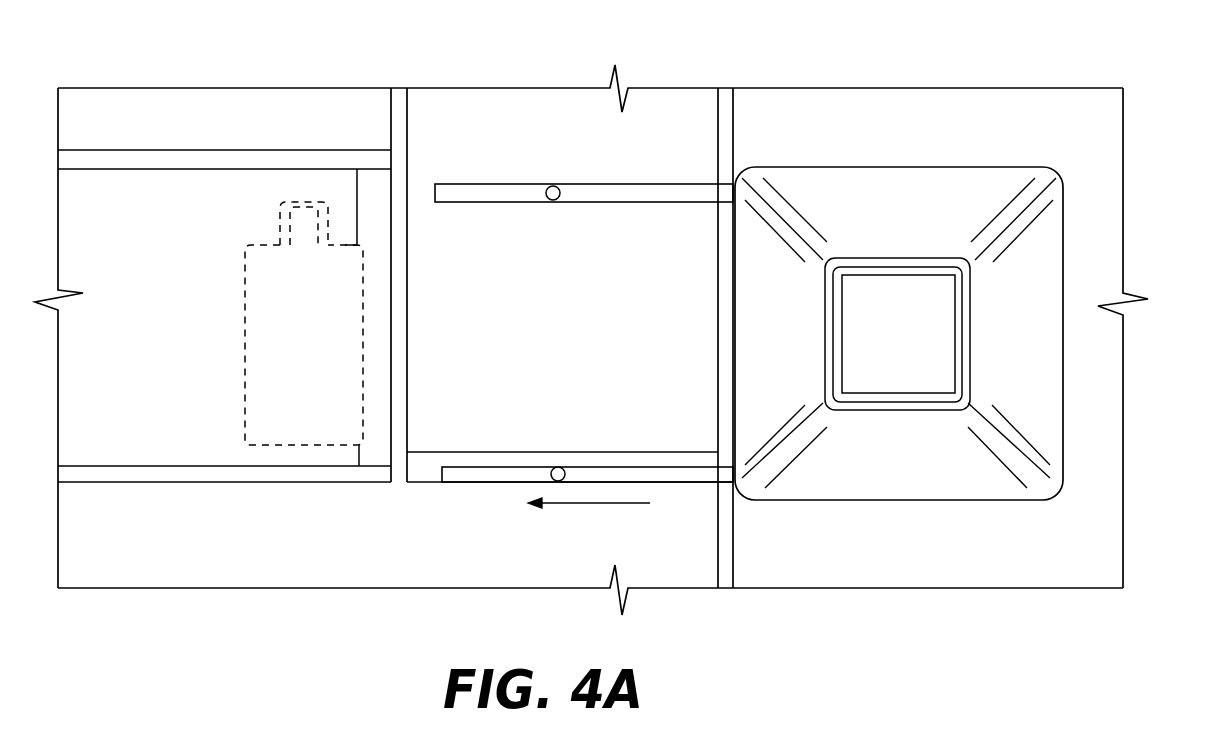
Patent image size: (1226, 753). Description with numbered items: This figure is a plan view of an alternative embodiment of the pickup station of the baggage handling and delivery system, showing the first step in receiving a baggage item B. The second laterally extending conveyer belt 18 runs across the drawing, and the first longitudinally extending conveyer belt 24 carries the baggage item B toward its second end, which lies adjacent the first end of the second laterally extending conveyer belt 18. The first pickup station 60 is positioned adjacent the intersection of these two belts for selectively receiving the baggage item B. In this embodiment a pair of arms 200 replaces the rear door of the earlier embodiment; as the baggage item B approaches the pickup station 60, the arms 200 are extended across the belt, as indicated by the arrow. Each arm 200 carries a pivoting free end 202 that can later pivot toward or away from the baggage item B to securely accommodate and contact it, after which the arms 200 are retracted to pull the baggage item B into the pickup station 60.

The second laterally extending conveyer belt 18 is at (493, 103).
The first longitudinally extending conveyer belt 24 is at (158, 188).
The first pickup station 60 is at (1063, 225).
The arms 200 is at (658, 190).
The pivoting free end 202 is at (482, 203).
The baggage item B is at (245, 364).